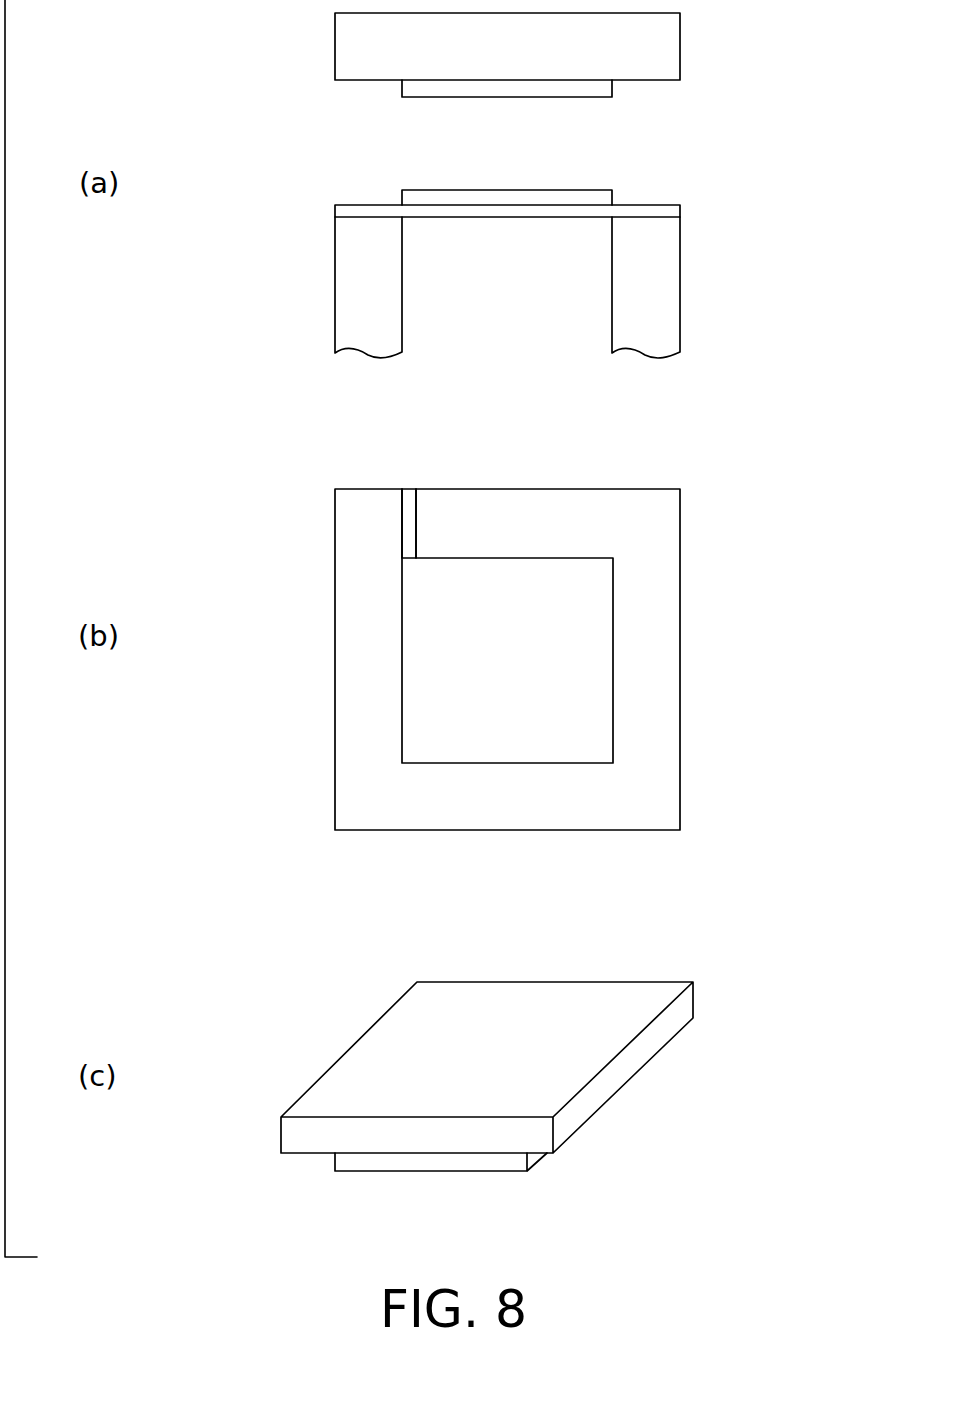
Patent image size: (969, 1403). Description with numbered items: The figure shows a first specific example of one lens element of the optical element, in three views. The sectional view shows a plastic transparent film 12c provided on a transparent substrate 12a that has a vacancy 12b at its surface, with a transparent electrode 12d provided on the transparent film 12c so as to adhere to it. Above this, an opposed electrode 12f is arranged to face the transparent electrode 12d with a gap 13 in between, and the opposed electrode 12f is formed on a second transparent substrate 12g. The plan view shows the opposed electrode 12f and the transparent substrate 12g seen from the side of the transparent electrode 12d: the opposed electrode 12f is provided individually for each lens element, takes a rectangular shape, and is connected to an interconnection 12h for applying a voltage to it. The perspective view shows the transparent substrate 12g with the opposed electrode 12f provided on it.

The transparent substrate 12a is at (352, 318).
The vacancy 12b is at (523, 297).
The plastic transparent film 12c is at (342, 211).
The transparent electrode 12d is at (592, 195).
The opposed electrode 12f is at (418, 97).
The transparent substrate 12g is at (663, 40).
The interconnection 12h is at (402, 525).
The gap 13 is at (562, 145).